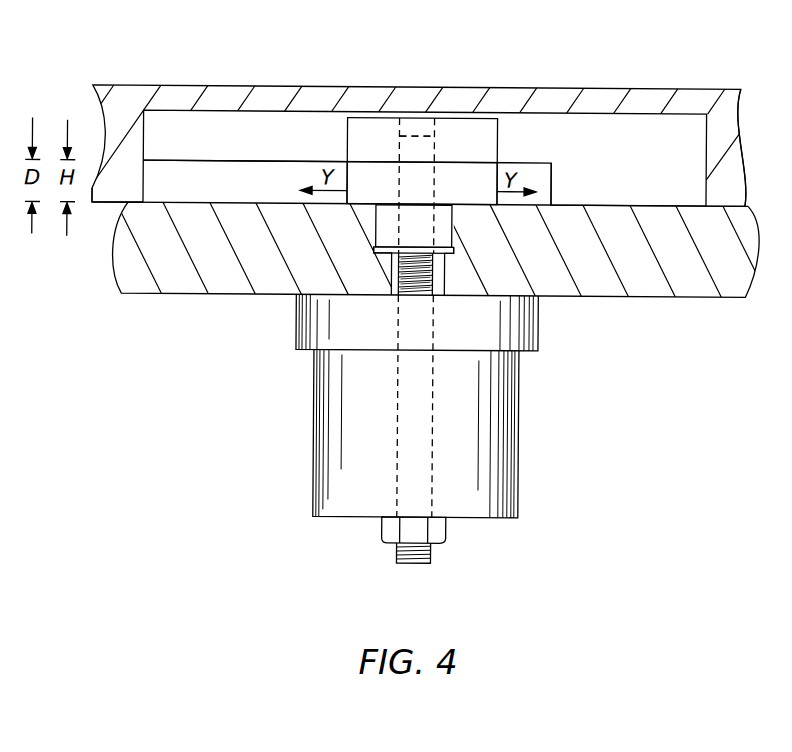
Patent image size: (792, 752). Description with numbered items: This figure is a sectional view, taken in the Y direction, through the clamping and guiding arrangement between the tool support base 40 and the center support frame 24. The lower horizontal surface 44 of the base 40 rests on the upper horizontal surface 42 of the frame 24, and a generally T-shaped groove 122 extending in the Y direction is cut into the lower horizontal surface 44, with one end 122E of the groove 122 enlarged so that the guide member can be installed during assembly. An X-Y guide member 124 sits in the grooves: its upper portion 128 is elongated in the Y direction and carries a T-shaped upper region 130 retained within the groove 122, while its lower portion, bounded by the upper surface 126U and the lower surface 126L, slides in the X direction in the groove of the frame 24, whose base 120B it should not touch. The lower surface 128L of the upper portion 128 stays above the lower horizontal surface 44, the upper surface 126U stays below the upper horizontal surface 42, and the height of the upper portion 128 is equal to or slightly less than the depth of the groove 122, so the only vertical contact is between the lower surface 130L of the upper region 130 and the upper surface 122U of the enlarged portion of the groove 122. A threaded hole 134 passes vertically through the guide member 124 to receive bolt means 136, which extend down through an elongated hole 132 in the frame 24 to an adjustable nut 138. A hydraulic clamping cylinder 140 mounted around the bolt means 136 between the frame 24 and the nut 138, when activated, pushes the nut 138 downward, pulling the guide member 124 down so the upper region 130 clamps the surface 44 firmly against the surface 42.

The tool support base 40 is at (700, 87).
The upper horizontal surface 42 is at (748, 206).
The lower horizontal surface 44 is at (105, 204).
The center support frame 24 is at (709, 296).
The base of the groove 120B is at (447, 245).
The groove 122 is at (180, 185).
The upper surface of the enlarged portion of the T-shaped groove 122U is at (203, 162).
The enlarged end of the groove 122E is at (604, 190).
The X-Y guide member 124 is at (389, 203).
The upper surface of the lower portion 126U is at (366, 252).
The lower surface of the lower portion 126L is at (384, 256).
The upper portion 128 is at (346, 133).
The lower surface of the upper portion 128L is at (353, 204).
The T-shaped upper region 130 is at (445, 132).
The lower surface of the upper region 130L is at (462, 164).
The elongated hole 132 is at (404, 290).
The threaded hole 134 is at (400, 143).
The bolt means 136 is at (423, 292).
The adjustable nut 138 is at (448, 527).
The hydraulic clamping cylinder 140 is at (468, 460).